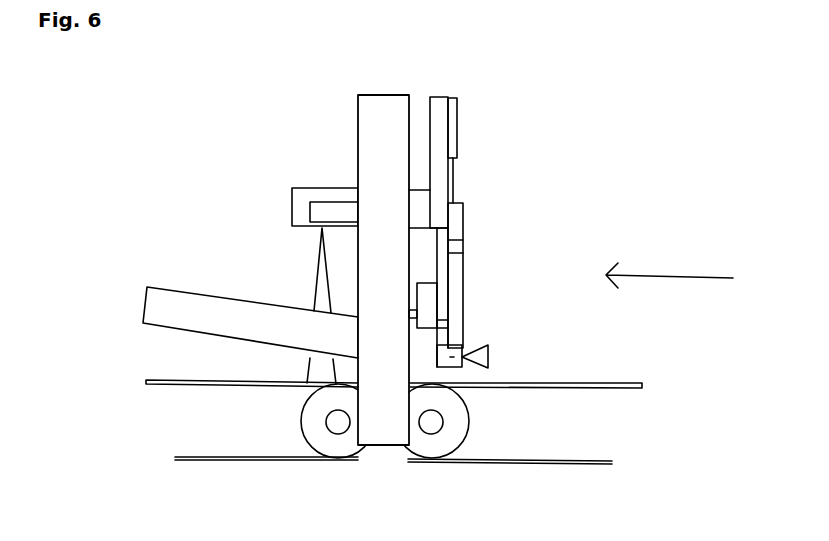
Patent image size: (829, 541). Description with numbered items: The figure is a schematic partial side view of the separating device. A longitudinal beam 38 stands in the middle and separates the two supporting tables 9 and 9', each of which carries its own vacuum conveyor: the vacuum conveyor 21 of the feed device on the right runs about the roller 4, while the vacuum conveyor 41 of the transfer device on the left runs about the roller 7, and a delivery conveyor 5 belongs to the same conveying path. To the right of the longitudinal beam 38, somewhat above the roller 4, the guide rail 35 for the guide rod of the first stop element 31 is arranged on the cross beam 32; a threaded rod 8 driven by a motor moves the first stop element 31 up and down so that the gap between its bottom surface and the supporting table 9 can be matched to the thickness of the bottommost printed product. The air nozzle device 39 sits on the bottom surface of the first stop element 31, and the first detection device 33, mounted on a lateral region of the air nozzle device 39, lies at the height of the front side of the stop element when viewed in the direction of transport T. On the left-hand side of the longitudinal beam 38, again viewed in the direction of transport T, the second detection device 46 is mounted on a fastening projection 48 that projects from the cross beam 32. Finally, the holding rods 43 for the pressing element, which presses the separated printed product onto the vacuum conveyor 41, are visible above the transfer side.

The roller 4 is at (431, 433).
The delivery conveyor 5 is at (443, 375).
The roller 7 is at (334, 433).
The threaded rod 8 is at (456, 117).
The supporting table 9 is at (650, 432).
The supporting table 9' is at (143, 425).
The vacuum conveyor 21 is at (630, 383).
The first stop element 31 is at (465, 268).
The cross beam 32 is at (420, 198).
The first detection device 33 is at (489, 346).
The guide rail 35 is at (442, 113).
The longitudinal beam 38 is at (372, 113).
The air nozzle device 39 is at (452, 357).
The vacuum conveyor 41 is at (150, 378).
The holding rods 43 is at (165, 301).
The second detection device 46 is at (323, 230).
The fastening projection 48 is at (307, 193).
The direction of transport T is at (669, 263).